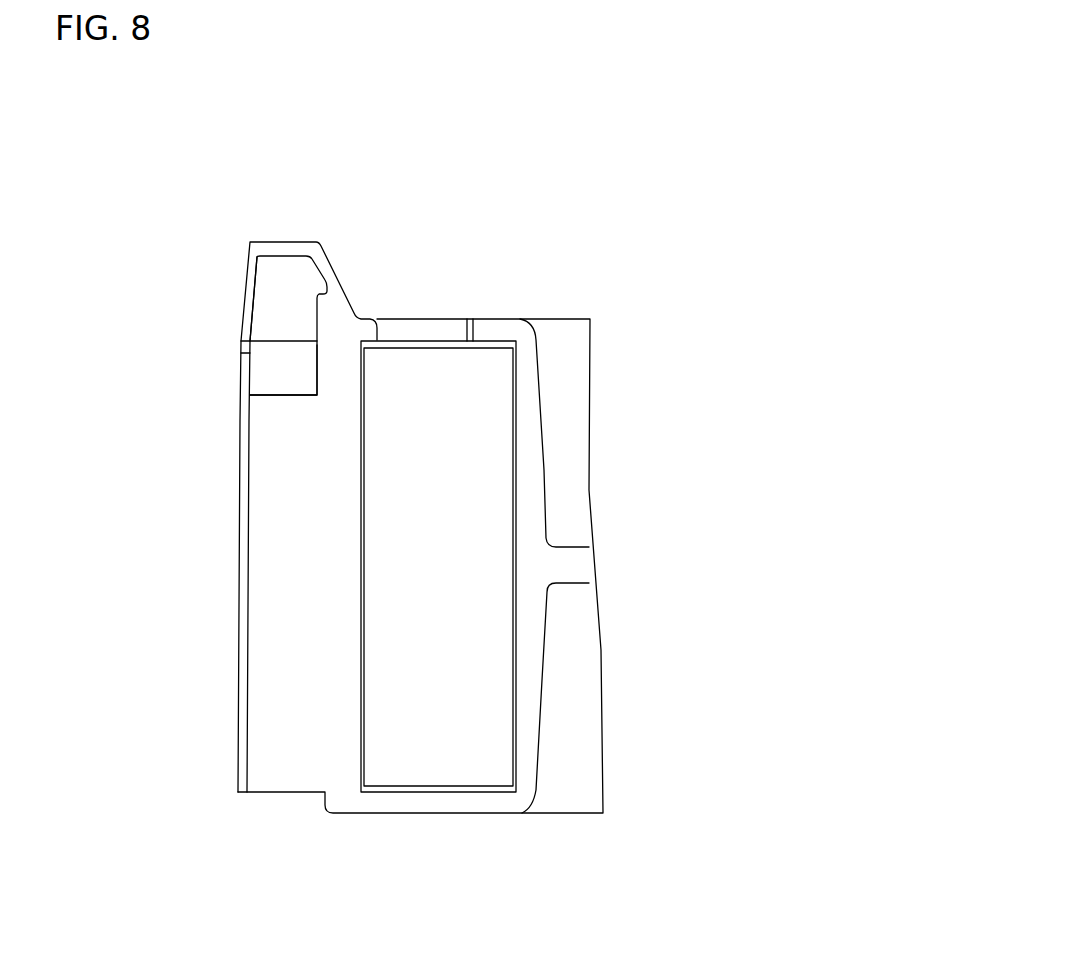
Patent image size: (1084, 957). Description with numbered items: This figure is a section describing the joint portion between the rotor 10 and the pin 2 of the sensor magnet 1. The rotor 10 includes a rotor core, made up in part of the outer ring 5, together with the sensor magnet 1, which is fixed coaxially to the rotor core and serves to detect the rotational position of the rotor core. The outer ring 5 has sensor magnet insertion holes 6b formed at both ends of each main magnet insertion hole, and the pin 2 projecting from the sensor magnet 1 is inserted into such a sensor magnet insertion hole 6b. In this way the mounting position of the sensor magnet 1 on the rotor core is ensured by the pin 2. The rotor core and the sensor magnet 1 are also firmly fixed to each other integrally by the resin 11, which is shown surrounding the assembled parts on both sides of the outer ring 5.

The rotor 10 is at (670, 218).
The sensor magnet 1 is at (277, 256).
The pin 2 is at (260, 363).
The sensor magnet insertion hole 6b is at (257, 384).
The outer ring 5 is at (505, 497).
The resin 11 is at (268, 570).